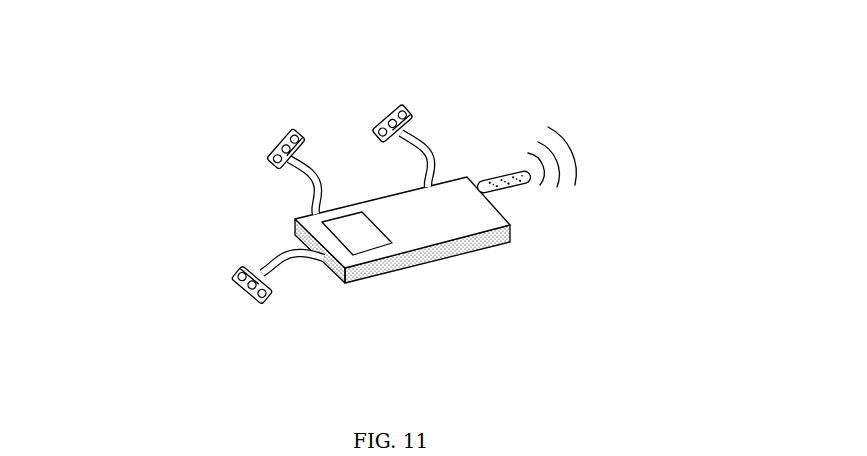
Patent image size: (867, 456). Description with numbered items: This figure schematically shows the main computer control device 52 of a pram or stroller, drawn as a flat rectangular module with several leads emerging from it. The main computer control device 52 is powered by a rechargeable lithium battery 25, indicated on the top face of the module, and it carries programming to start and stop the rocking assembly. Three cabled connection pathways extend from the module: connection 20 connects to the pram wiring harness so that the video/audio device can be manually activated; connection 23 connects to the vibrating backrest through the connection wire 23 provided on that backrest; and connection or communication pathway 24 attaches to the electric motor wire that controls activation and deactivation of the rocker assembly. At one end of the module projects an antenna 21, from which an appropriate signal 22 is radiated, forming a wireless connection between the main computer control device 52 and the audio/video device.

The main computer control device 52 is at (210, 180).
The connection 20 is at (261, 125).
The connection wire 23 is at (368, 107).
The connection or communication pathway 24 is at (202, 300).
The rechargeable lithium battery 25 is at (384, 261).
The antenna 21 is at (521, 196).
The signal 22 is at (590, 120).